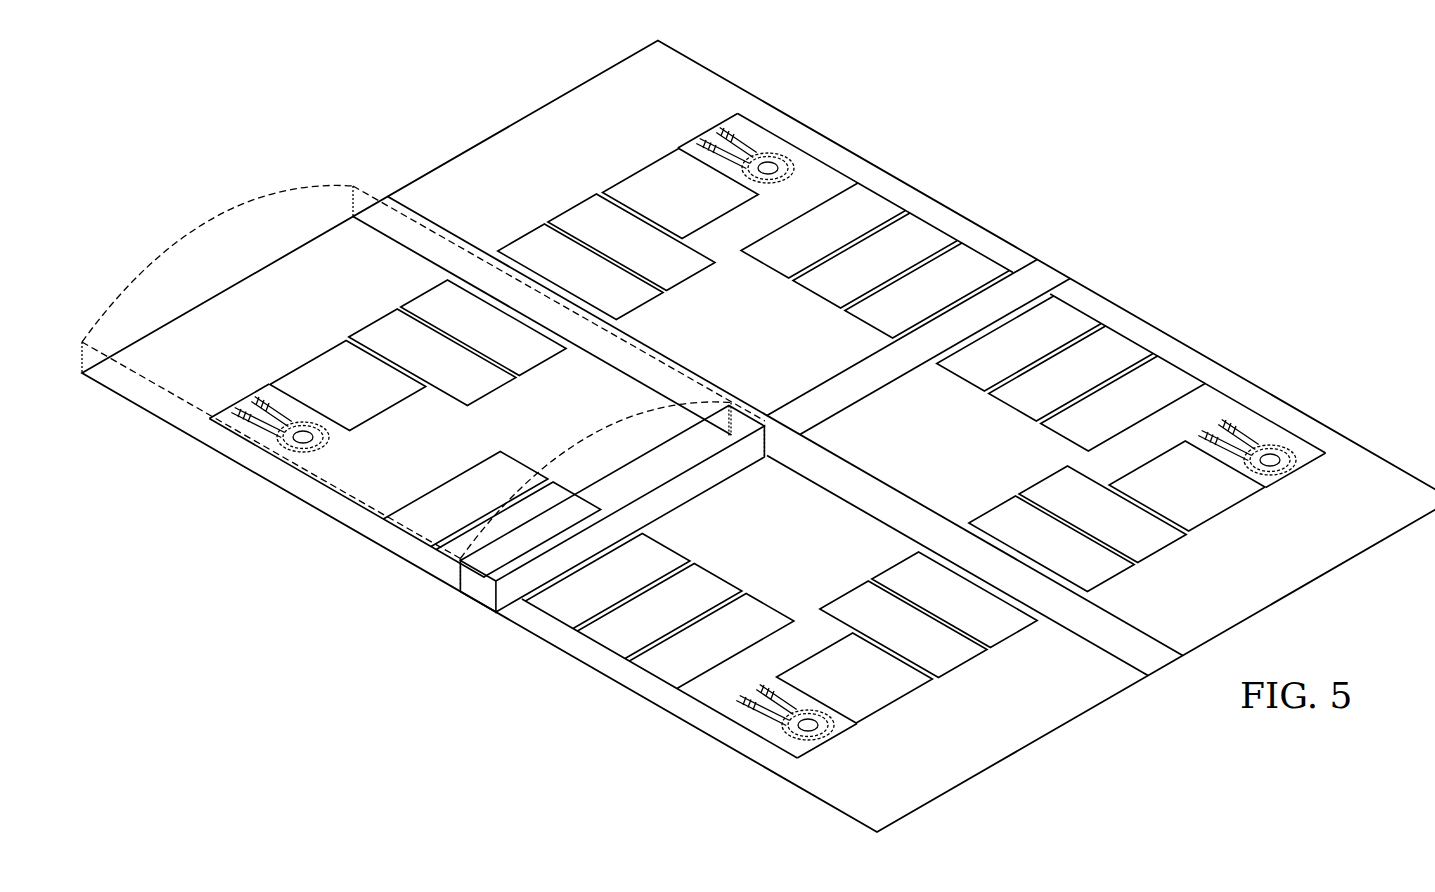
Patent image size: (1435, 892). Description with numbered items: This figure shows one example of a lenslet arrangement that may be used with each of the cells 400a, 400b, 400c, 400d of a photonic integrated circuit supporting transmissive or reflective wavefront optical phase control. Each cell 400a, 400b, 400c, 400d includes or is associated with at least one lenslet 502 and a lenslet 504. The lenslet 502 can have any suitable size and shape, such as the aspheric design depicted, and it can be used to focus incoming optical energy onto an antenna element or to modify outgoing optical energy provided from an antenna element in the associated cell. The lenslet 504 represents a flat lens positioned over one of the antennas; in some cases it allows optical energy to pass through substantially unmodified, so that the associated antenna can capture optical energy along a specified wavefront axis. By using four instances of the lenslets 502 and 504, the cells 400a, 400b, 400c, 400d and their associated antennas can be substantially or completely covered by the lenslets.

The cell 400a is at (300, 329).
The cell 400b is at (597, 158).
The cell 400c is at (999, 727).
The cell 400d is at (1294, 554).
The lenslet 502 is at (163, 250).
The lenslet 504 is at (767, 437).